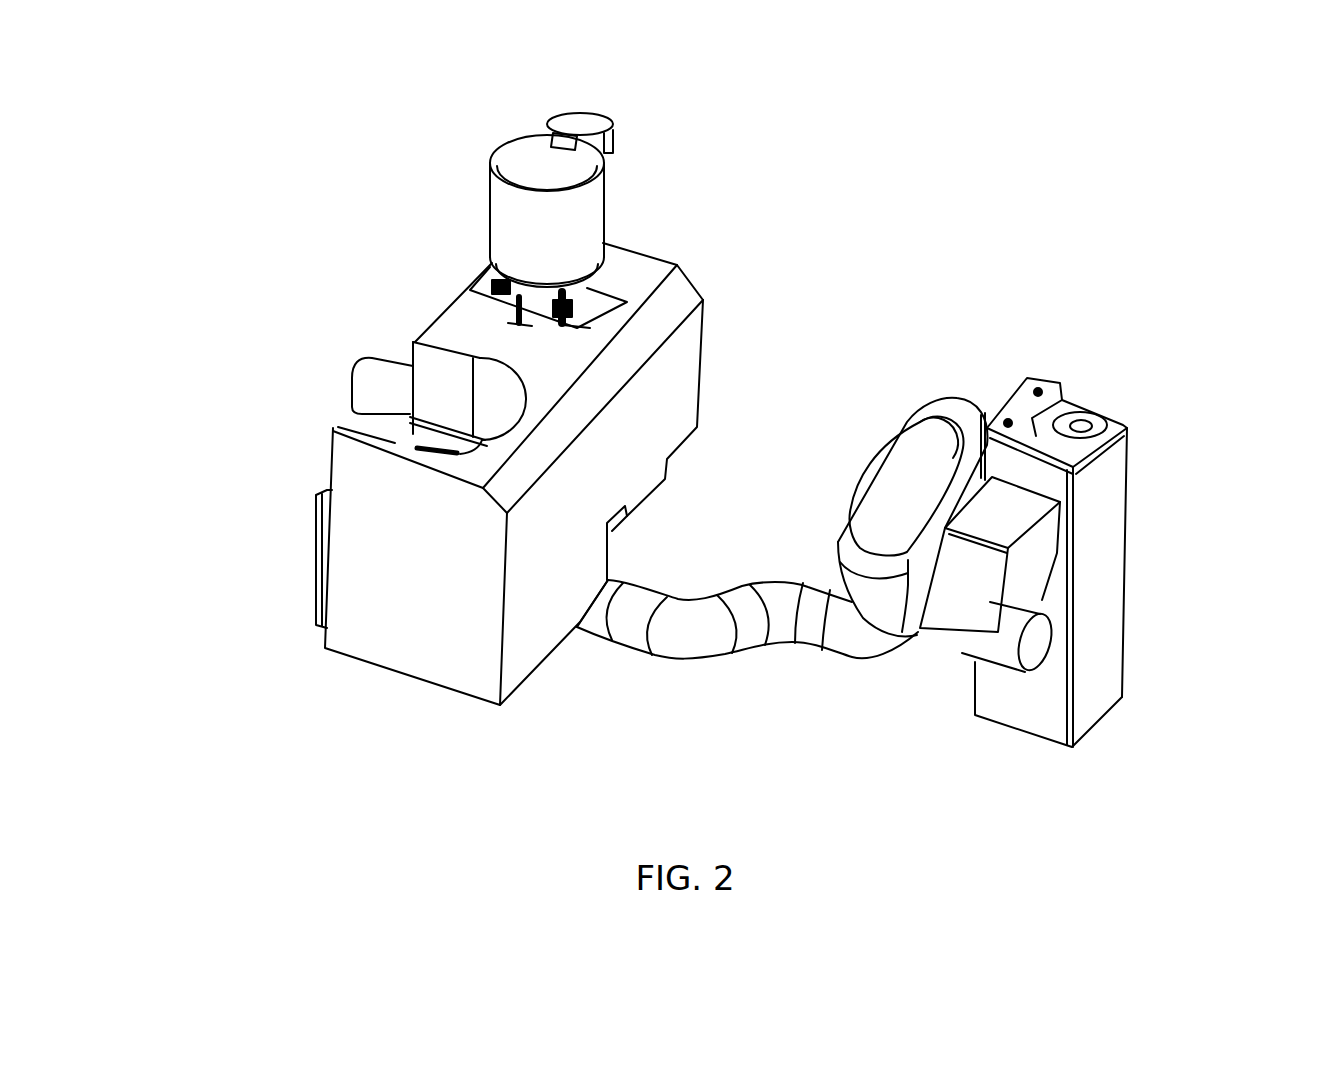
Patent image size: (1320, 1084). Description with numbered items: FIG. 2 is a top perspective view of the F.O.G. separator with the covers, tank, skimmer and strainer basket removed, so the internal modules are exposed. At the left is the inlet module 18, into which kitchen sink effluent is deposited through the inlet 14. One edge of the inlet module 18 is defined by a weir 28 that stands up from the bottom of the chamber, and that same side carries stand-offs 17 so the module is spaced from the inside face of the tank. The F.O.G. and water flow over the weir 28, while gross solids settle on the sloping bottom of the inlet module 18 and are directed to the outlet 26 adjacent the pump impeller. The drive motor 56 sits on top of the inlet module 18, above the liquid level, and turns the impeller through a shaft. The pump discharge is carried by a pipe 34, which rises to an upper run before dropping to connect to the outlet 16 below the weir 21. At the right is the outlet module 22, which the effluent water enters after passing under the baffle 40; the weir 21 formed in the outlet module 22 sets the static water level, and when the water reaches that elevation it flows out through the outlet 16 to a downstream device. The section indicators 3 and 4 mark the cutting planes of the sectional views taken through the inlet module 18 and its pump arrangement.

The section line 3- 3 is at (447, 293).
The section line 4- 4 is at (608, 223).
The inlet 14 is at (372, 378).
The outlet 16 is at (1022, 613).
The stand-offs 17 is at (322, 553).
The inlet module 18 is at (680, 297).
The weir 21 is at (1050, 540).
The outlet module 22 is at (1113, 473).
The outlet 26 is at (592, 623).
The weir 28 is at (388, 432).
The pipe 34 is at (783, 592).
The baffle 40 is at (1042, 740).
The drive motor 56 is at (519, 248).